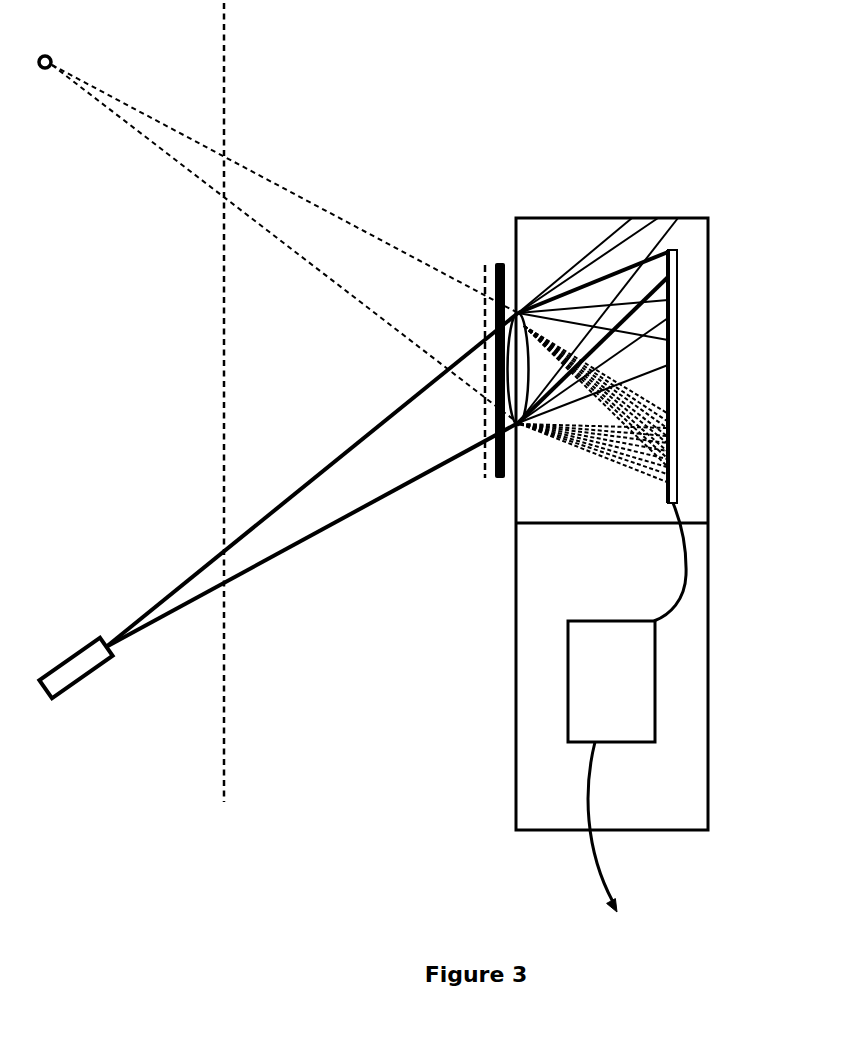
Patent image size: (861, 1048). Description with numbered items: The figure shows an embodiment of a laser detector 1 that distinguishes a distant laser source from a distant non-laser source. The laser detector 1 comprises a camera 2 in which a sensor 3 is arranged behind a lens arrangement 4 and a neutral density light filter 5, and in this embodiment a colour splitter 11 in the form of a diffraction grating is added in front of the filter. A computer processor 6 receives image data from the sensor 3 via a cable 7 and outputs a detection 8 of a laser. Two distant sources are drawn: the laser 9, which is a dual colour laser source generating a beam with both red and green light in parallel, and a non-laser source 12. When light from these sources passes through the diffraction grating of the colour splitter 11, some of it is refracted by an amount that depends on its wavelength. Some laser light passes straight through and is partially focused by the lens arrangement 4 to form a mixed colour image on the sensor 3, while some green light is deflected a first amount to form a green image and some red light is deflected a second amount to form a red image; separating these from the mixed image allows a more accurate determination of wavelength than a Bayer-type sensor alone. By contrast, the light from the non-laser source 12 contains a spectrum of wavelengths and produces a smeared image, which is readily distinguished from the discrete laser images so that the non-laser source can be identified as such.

The laser detector 1 is at (632, 524).
The camera 2 is at (598, 293).
The sensor 3 is at (608, 376).
The lens arrangement 4 is at (525, 346).
The neutral density light filter 5 is at (495, 354).
The computer processor 6 is at (611, 681).
The cable 7 is at (670, 562).
The detection 8 is at (609, 827).
The laser 9 is at (278, 510).
The colour splitter 11 is at (467, 359).
The non-laser source 12 is at (278, 219).